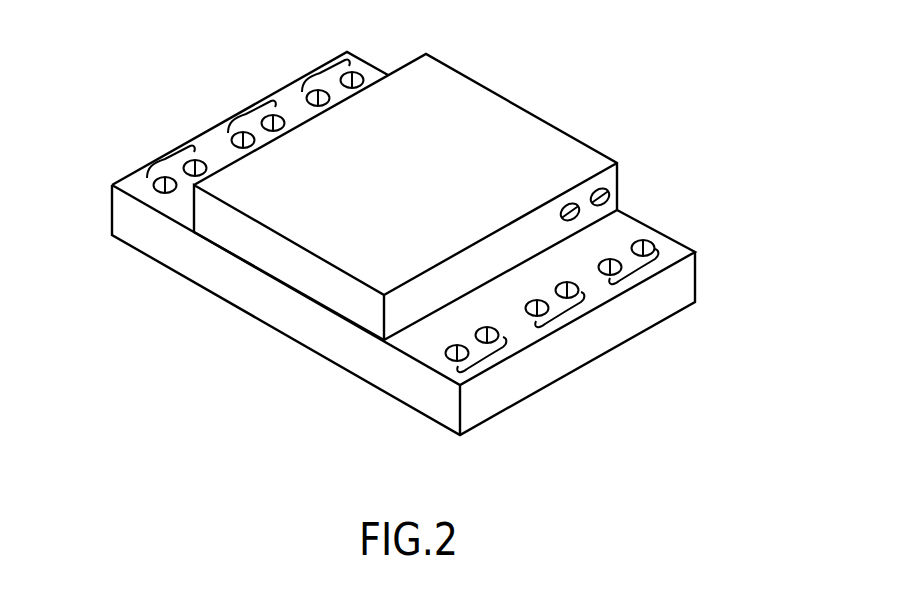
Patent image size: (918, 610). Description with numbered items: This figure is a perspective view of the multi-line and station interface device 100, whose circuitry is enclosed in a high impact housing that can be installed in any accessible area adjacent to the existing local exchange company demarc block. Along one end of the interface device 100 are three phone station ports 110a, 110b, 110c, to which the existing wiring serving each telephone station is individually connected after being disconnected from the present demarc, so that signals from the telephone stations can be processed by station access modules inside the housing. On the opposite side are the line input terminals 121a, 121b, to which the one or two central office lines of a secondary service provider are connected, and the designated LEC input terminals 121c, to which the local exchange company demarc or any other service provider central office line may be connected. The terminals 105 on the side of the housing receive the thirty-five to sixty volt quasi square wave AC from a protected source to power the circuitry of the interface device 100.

The multi-line and station interface device 100 is at (523, 88).
The terminals 105 is at (612, 184).
The phone station port 110a is at (318, 72).
The phone station port 110b is at (247, 112).
The phone station port 110c is at (170, 157).
The line input terminal 121a is at (650, 273).
The line input terminal 121b is at (570, 318).
The LEC input terminals 121c is at (493, 367).